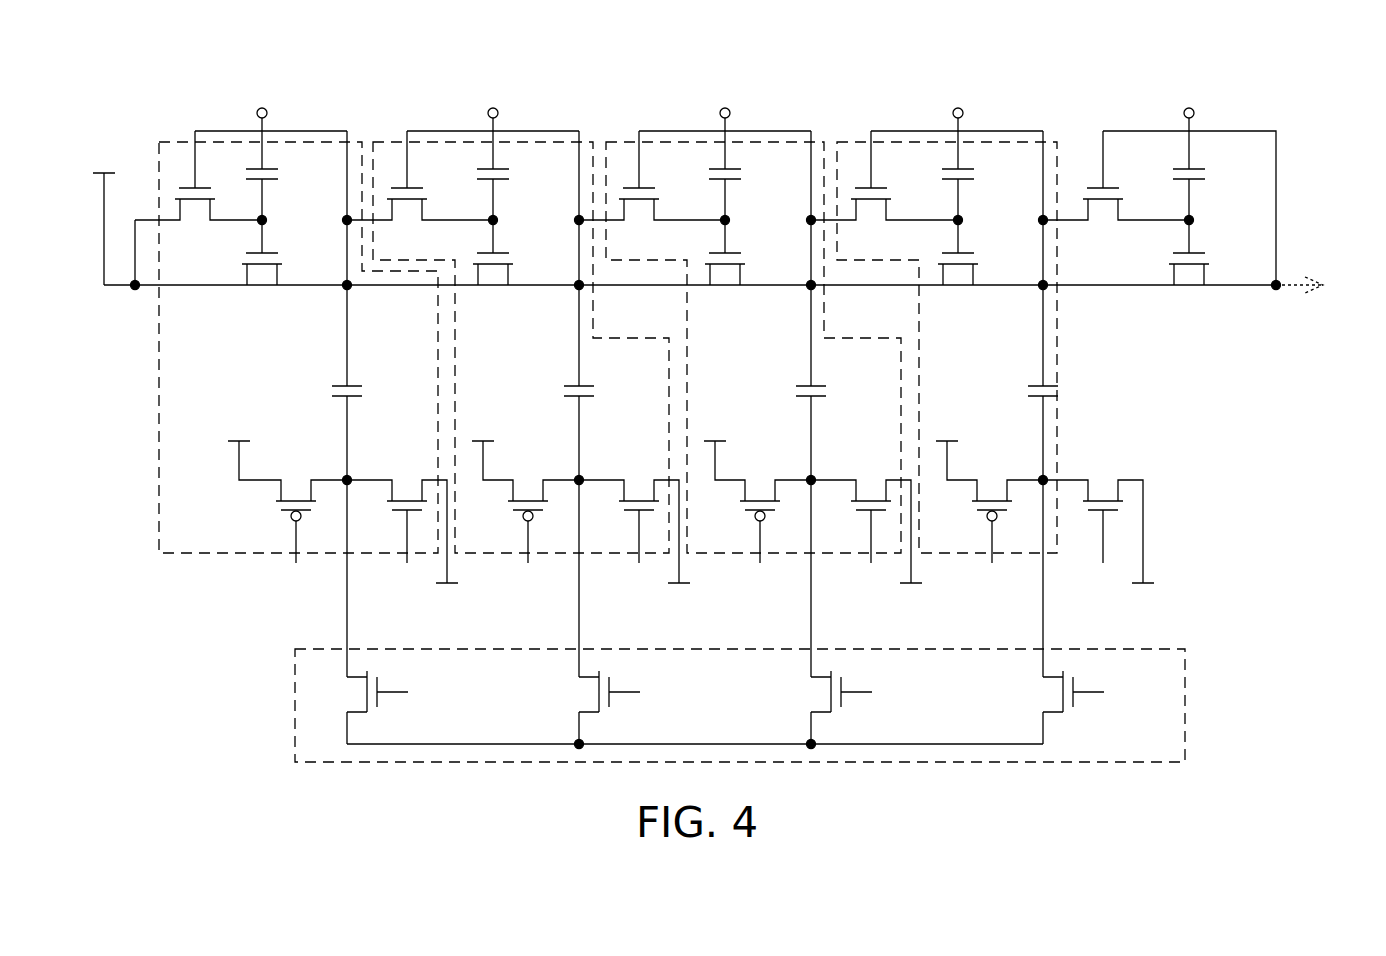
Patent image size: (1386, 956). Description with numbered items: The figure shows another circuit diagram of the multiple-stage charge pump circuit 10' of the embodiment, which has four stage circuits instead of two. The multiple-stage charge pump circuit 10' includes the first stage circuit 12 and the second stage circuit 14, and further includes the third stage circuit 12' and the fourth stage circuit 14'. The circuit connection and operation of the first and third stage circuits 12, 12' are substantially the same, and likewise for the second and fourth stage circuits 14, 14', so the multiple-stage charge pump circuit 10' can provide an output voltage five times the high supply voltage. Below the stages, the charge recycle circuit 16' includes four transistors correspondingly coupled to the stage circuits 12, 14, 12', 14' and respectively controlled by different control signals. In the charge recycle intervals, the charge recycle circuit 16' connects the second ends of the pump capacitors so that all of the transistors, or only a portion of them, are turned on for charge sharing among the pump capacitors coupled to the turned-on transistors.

The multiple-stage charge pump circuit 10' is at (704, 401).
The first stage circuit 12 is at (314, 344).
The second stage circuit 14 is at (540, 344).
The third stage circuit 12' is at (770, 344).
The fourth stage circuit 14' is at (1003, 344).
The charge recycle circuit 16' is at (785, 705).